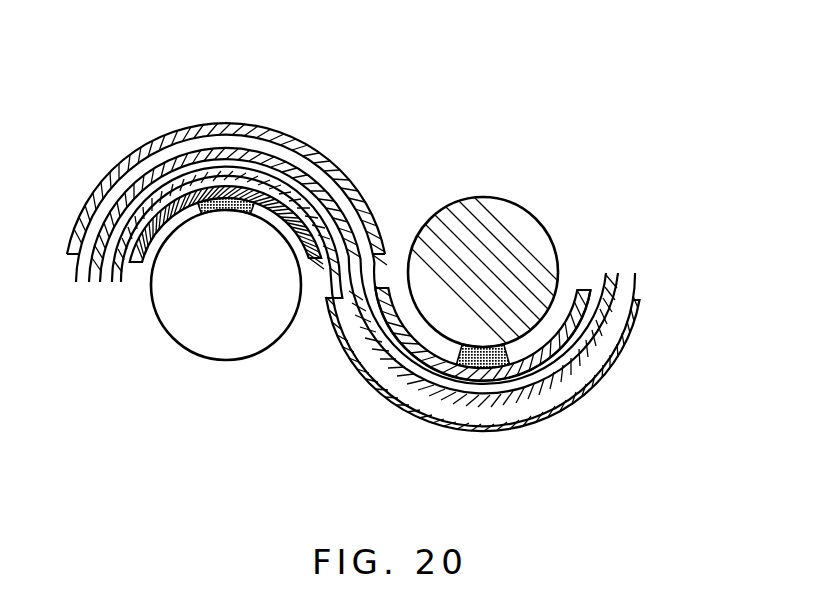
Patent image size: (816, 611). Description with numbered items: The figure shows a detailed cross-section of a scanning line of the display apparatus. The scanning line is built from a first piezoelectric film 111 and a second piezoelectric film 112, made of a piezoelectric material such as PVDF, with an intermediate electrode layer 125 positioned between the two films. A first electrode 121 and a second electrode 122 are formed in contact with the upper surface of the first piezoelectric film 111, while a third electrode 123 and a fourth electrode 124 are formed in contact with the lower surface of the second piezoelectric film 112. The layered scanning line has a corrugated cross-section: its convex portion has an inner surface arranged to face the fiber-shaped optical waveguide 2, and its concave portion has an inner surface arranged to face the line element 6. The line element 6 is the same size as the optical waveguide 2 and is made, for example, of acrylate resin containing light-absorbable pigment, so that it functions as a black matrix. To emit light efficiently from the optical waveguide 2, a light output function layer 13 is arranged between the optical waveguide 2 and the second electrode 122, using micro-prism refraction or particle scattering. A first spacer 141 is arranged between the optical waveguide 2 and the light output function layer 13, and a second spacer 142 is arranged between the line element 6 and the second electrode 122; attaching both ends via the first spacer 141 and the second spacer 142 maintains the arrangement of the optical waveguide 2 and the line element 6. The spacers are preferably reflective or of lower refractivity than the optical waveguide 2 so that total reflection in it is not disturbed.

The optical waveguide 2 is at (226, 348).
The line element 6 is at (540, 228).
The light output function layer 13 is at (138, 262).
The first piezoelectric film 111 is at (590, 323).
The second piezoelectric film 112 is at (593, 366).
The first electrode 121 is at (171, 132).
The second electrode 122 is at (400, 340).
The third electrode 123 is at (218, 185).
The fourth electrode 124 is at (486, 430).
The intermediate electrode layer 125 is at (262, 203).
The first spacer 141 is at (323, 154).
The second spacer 142 is at (553, 336).